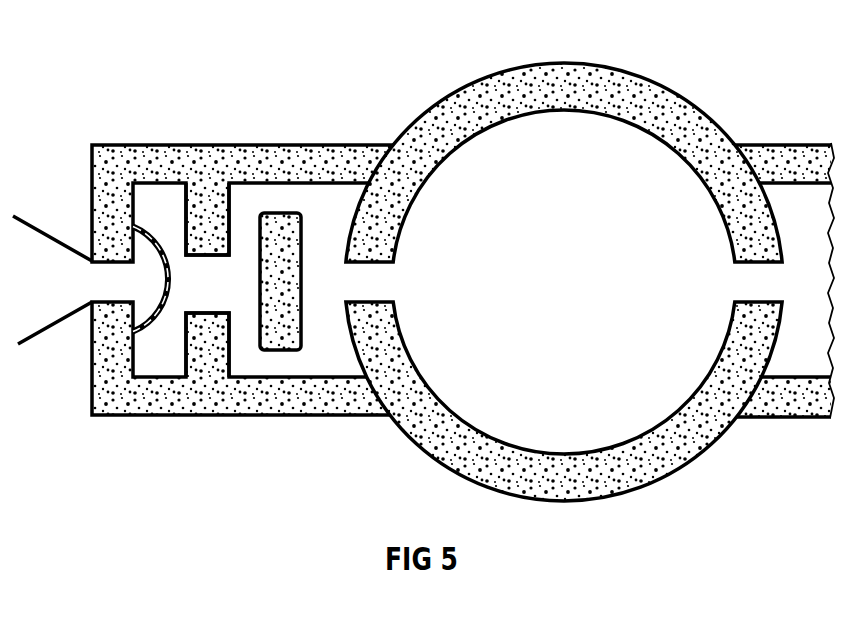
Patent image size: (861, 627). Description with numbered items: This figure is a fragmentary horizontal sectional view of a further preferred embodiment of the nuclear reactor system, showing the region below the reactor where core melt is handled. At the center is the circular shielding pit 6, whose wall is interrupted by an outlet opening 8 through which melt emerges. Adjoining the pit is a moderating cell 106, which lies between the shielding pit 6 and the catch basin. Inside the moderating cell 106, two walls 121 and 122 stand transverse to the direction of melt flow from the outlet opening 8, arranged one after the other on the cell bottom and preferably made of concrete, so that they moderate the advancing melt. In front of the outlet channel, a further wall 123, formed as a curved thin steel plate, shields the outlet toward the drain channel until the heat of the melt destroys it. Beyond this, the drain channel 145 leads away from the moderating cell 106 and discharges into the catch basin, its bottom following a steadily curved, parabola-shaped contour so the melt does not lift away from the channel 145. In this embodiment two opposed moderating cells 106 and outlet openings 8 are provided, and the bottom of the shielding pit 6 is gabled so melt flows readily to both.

The shielding pit 6 is at (657, 177).
The outlet opening 8 is at (363, 282).
The moderating cell 106 is at (330, 210).
The wall 121 is at (273, 343).
The wall 122 is at (207, 237).
The wall 123 is at (160, 320).
The drain channel 145 is at (45, 256).